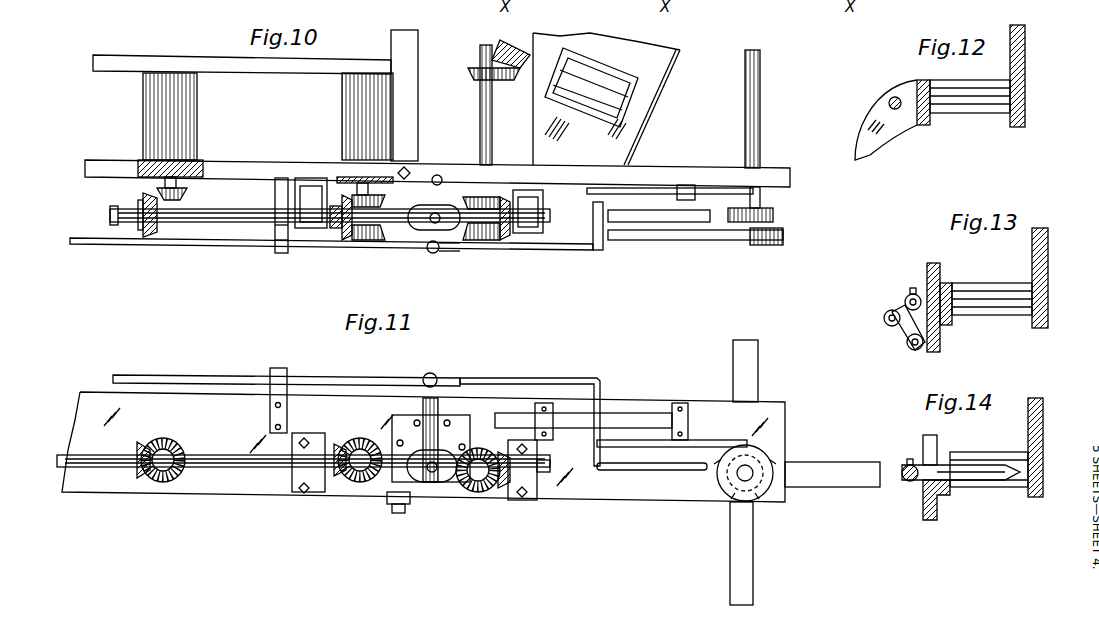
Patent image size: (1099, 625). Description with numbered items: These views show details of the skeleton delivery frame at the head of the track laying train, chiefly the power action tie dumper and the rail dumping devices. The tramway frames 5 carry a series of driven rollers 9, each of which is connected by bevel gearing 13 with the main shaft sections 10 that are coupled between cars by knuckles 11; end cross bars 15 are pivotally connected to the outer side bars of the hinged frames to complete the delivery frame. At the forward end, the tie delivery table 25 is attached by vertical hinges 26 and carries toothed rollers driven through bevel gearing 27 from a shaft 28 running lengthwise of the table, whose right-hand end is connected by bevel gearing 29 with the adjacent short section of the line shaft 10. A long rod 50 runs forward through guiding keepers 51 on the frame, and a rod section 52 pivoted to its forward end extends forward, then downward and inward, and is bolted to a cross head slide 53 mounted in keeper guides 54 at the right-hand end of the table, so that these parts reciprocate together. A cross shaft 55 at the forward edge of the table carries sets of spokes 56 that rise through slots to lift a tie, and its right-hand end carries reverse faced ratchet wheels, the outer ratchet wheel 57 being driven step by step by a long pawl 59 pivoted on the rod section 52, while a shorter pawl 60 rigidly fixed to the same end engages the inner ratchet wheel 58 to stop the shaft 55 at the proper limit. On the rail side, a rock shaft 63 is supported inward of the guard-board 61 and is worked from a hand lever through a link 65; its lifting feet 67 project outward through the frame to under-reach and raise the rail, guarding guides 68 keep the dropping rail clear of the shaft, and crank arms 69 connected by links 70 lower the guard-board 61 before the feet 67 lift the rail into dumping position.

In FIG. 10, the tramway frame 5 is at (120, 68).
In FIG. 11, the tramway frame 5 is at (423, 447).
In FIG. 12, the tramway frame 5 is at (1027, 62).
In FIG. 13, the tramway frame 5 is at (944, 285).
In FIG. 14, the tramway frame 5 is at (938, 456).
In FIG. 10, the driven roller 9 is at (190, 108).
In FIG. 12, the driven roller 9 is at (992, 113).
In FIG. 13, the driven roller 9 is at (980, 286).
In FIG. 14, the driven roller 9 is at (975, 456).
In FIG. 10, the main shaft section 10 is at (230, 224).
In FIG. 11, the main shaft section 10 is at (226, 468).
In FIG. 10, the knuckle 11 is at (420, 235).
In FIG. 11, the knuckle 11 is at (435, 485).
In FIG. 10, the bevel gearing 13 is at (142, 200).
In FIG. 11, the bevel gearing 13 is at (158, 483).
In FIG. 10, the end cross bar 15 is at (405, 115).
In FIG. 11, the end cross bar 15 is at (395, 510).
In FIG. 10, the tie delivery table 25 is at (660, 74).
In FIG. 11, the tie delivery table 25 is at (650, 497).
In FIG. 10, the vertical hinge 26 is at (437, 175).
In FIG. 11, the vertical hinge 26 is at (392, 430).
In FIG. 10, the bevel gearing 27 is at (478, 62).
In FIG. 10, the shaft 28 is at (492, 105).
In FIG. 10, the bevel gearing 29 is at (497, 238).
In FIG. 11, the bevel gearing 29 is at (480, 494).
In FIG. 10, the rod 50 is at (142, 246).
In FIG. 11, the rod 50 is at (170, 383).
In FIG. 10, the guiding keeper 51 is at (284, 254).
In FIG. 11, the guiding keeper 51 is at (286, 390).
In FIG. 10, the rod section 52 is at (596, 250).
In FIG. 11, the rod section 52 is at (490, 380).
In FIG. 10, the cross head slide 53 is at (640, 188).
In FIG. 11, the cross head slide 53 is at (648, 415).
In FIG. 10, the keeper guide 54 is at (545, 194).
In FIG. 11, the keeper guide 54 is at (548, 413).
In FIG. 11, the cross shaft 55 is at (740, 478).
In FIG. 11, the spoke 56 is at (752, 358).
In FIG. 10, the outer ratchet wheel 57 is at (784, 237).
In FIG. 11, the outer ratchet wheel 57 is at (772, 490).
In FIG. 10, the inner ratchet wheel 58 is at (775, 216).
In FIG. 11, the inner ratchet wheel 58 is at (718, 482).
In FIG. 10, the long pawl 59 is at (708, 241).
In FIG. 11, the long pawl 59 is at (705, 445).
In FIG. 10, the shorter pawl 60 is at (655, 222).
In FIG. 11, the shorter pawl 60 is at (603, 472).
In FIG. 13, the guard-board 61 is at (941, 336).
In FIG. 14, the guard-board 61 is at (928, 522).
In FIG. 12, the rock shaft 63 is at (889, 102).
In FIG. 13, the rock shaft 63 is at (905, 300).
In FIG. 14, the rock shaft 63 is at (904, 467).
In FIG. 10, the link 65 is at (762, 84).
In FIG. 14, the lifting foot 67 is at (970, 482).
In FIG. 12, the guarding guide 68 is at (900, 122).
In FIG. 13, the crank arm 69 is at (885, 315).
In FIG. 13, the link 70 is at (905, 338).